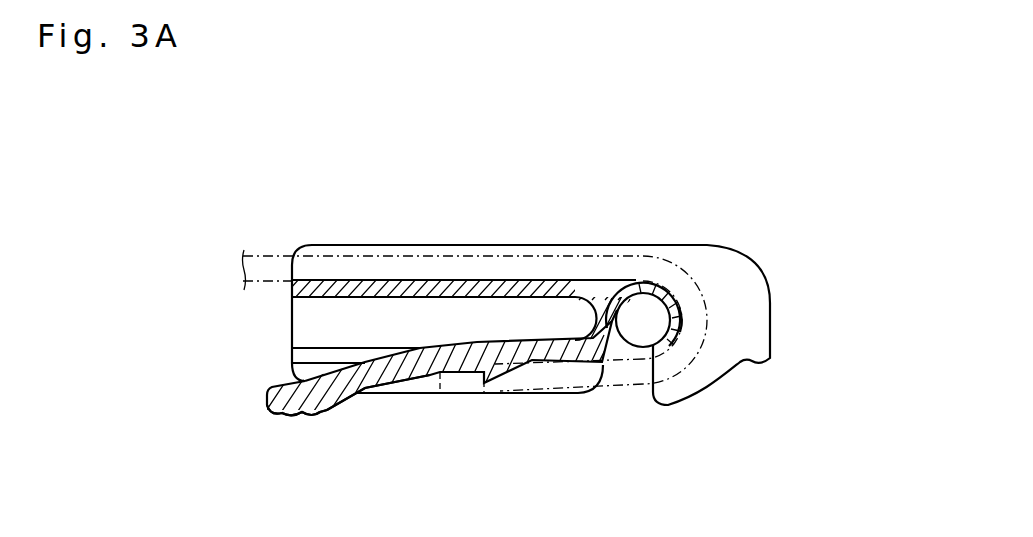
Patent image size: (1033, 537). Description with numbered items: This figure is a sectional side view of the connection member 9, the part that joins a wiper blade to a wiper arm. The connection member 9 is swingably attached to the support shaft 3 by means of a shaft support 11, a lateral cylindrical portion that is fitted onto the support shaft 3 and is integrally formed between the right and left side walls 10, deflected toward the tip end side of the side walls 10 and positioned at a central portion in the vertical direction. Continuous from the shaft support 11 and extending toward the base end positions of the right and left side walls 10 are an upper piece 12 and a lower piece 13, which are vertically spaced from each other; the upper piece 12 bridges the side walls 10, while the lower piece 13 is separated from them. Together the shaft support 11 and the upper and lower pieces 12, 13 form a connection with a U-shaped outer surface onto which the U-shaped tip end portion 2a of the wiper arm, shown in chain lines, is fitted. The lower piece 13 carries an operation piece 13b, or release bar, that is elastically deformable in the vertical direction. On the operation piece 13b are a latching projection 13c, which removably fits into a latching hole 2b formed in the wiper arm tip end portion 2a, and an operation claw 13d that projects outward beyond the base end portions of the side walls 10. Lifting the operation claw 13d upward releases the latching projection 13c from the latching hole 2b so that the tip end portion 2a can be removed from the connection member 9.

The U-shaped tip end portion 2a is at (448, 258).
The latching hole 2b is at (520, 393).
The support shaft 3 is at (645, 310).
The connection member 9 is at (606, 157).
The right and left side walls 10 is at (743, 305).
The shaft support 11 is at (667, 342).
The upper piece 12 is at (400, 290).
The lower piece 13 is at (537, 368).
The operation piece (release bar) 13b is at (330, 378).
The latching projection 13c is at (486, 393).
The operation claw 13d is at (285, 407).